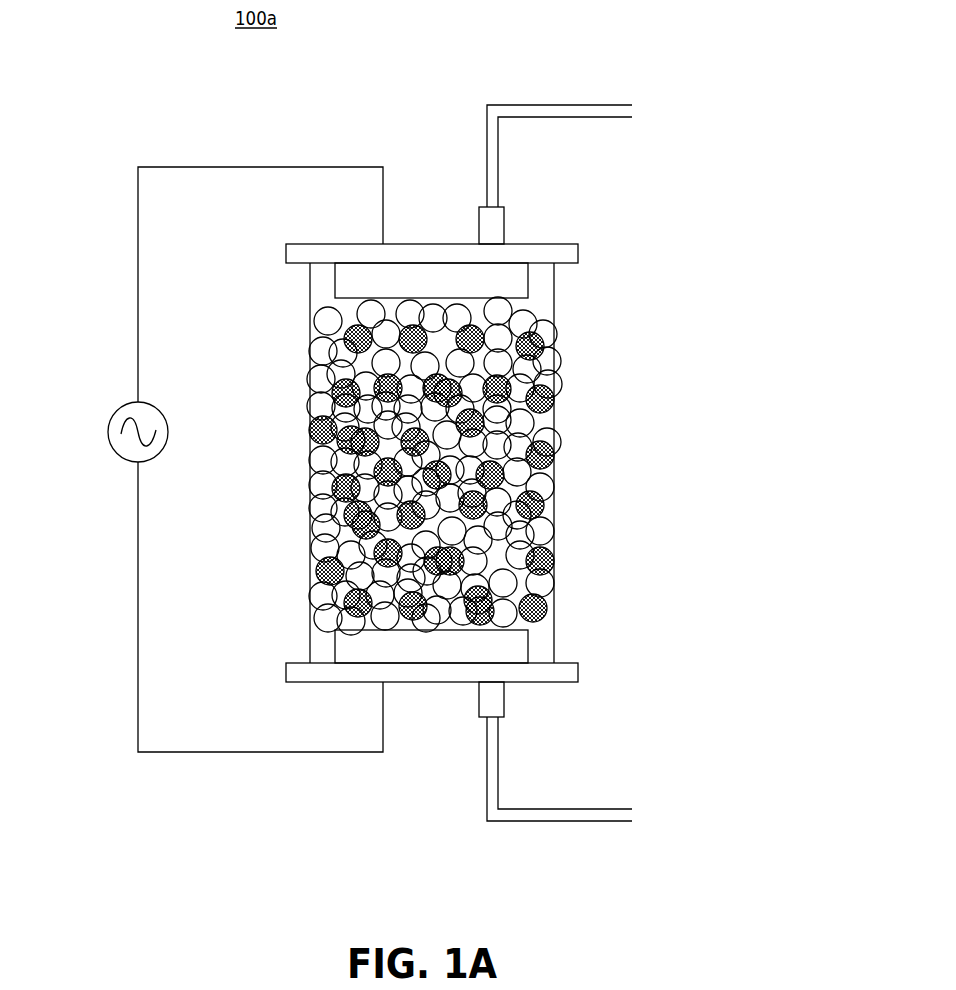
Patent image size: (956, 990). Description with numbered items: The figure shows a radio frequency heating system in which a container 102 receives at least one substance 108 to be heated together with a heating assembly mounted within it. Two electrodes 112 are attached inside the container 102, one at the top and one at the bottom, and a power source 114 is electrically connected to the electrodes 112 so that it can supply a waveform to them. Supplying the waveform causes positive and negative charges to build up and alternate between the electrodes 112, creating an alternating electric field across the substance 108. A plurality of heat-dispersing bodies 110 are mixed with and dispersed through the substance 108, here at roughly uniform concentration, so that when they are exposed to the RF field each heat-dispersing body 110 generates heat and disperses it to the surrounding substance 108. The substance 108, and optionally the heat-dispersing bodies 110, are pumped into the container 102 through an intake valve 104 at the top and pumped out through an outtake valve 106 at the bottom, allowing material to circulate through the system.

The container 102 is at (567, 311).
The intake valve 104 is at (506, 188).
The outtake valve 106 is at (505, 760).
The substance 108 is at (308, 498).
The heat-dispersing body 110 is at (308, 428).
The electrode 112 is at (350, 278).
The power source 114 is at (122, 402).